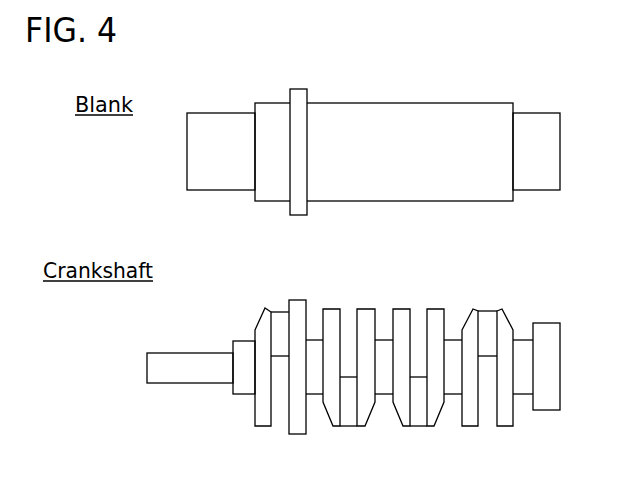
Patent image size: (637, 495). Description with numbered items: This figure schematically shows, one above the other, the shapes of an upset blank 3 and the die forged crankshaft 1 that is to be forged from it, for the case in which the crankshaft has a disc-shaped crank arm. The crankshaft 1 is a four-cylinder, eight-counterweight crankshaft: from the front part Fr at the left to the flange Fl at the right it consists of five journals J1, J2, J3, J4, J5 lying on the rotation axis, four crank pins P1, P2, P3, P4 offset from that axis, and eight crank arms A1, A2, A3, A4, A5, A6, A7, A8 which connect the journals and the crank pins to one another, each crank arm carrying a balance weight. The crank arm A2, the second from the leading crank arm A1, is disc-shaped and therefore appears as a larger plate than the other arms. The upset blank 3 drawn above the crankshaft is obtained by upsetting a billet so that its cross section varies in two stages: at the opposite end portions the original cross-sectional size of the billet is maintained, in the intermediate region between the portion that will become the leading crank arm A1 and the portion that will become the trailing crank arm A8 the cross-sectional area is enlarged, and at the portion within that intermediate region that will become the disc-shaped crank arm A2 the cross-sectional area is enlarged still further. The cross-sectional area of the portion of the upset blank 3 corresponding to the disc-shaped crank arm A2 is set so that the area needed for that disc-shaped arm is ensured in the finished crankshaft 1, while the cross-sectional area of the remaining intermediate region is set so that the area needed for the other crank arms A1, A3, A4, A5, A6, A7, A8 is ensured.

The upset blank 3 is at (567, 122).
The crankshaft 1 is at (566, 323).
The front part Fr is at (197, 353).
The flange Fl is at (551, 323).
The journal J1 is at (243, 341).
The journal J2 is at (314, 394).
The journal J3 is at (383, 394).
The journal J4 is at (455, 341).
The journal J5 is at (520, 341).
The crank pin P1 is at (283, 312).
The crank pin P2 is at (349, 426).
The crank pin P3 is at (418, 426).
The crank pin P4 is at (490, 311).
The leading crank arm A1 is at (258, 426).
The disc-shaped crank arm A2 is at (296, 434).
The crank arm A3 is at (332, 309).
The crank arm A4 is at (366, 309).
The crank arm A5 is at (400, 309).
The crank arm A6 is at (436, 309).
The crank arm A7 is at (466, 426).
The trailing crank arm A8 is at (502, 426).